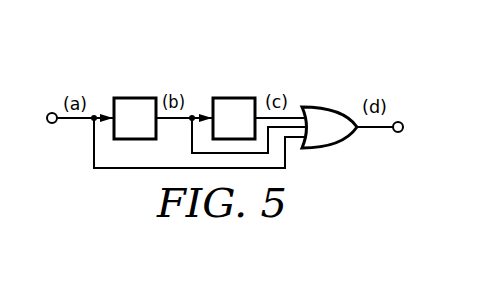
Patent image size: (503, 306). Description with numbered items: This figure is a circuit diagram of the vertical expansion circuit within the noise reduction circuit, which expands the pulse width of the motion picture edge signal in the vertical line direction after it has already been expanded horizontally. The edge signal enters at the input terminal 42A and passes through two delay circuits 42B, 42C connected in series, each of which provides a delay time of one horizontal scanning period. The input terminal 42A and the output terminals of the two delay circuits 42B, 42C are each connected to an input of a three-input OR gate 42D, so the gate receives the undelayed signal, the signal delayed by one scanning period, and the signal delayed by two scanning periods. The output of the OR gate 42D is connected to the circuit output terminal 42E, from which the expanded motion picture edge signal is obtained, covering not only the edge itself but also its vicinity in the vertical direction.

The input terminal 42A is at (53, 125).
The delay circuit 42B is at (135, 98).
The delay circuit 42C is at (233, 98).
The 3-input OR gate 42D is at (325, 107).
The circuit output terminal 42E is at (400, 122).